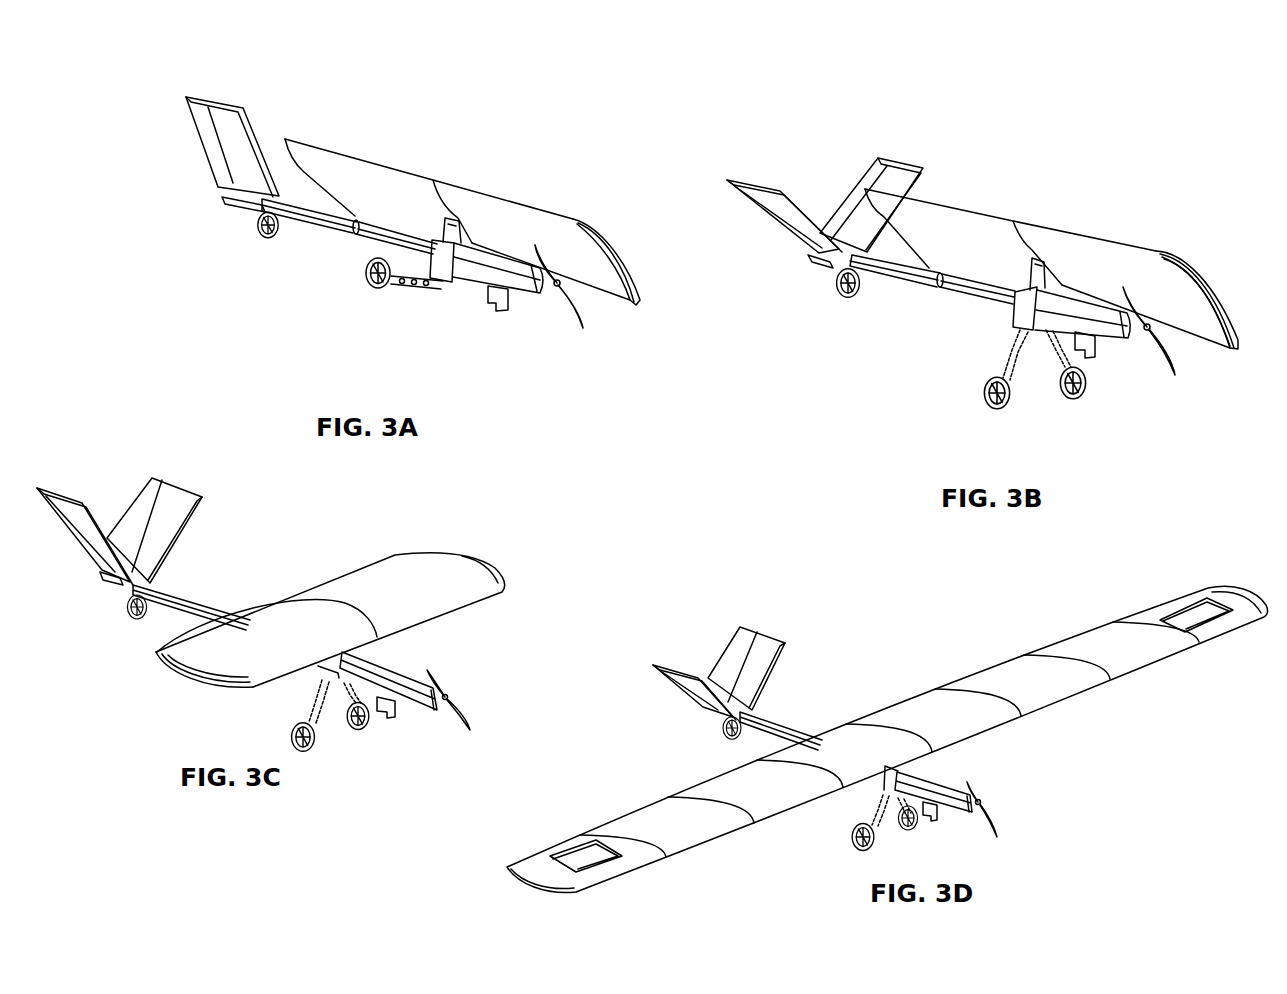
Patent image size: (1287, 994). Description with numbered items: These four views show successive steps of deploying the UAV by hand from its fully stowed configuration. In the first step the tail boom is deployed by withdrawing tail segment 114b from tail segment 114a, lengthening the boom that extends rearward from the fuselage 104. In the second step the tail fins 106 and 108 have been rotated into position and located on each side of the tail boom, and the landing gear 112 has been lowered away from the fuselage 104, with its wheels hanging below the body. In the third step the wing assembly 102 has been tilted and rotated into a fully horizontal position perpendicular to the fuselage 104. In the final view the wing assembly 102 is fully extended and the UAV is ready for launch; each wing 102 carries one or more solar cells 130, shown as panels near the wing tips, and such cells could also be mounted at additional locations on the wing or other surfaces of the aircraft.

In FIG. 3B, the wing assembly 102 is at (1125, 243).
In FIG. 3C, the wing assembly 102 is at (463, 588).
In FIG. 3D, the wing assembly 102 is at (1138, 658).
In FIG. 3A, the fuselage 104 is at (528, 291).
In FIG. 3B, the tail fin 106 is at (748, 182).
In FIG. 3B, the tail fin 108 is at (882, 176).
In FIG. 3B, the landing gear 112 is at (1000, 387).
In FIG. 3A, the tail segment 114a is at (362, 235).
In FIG. 3A, the tail segment 114b is at (298, 213).
In FIG. 3D, the solar cells 130 is at (1190, 612).